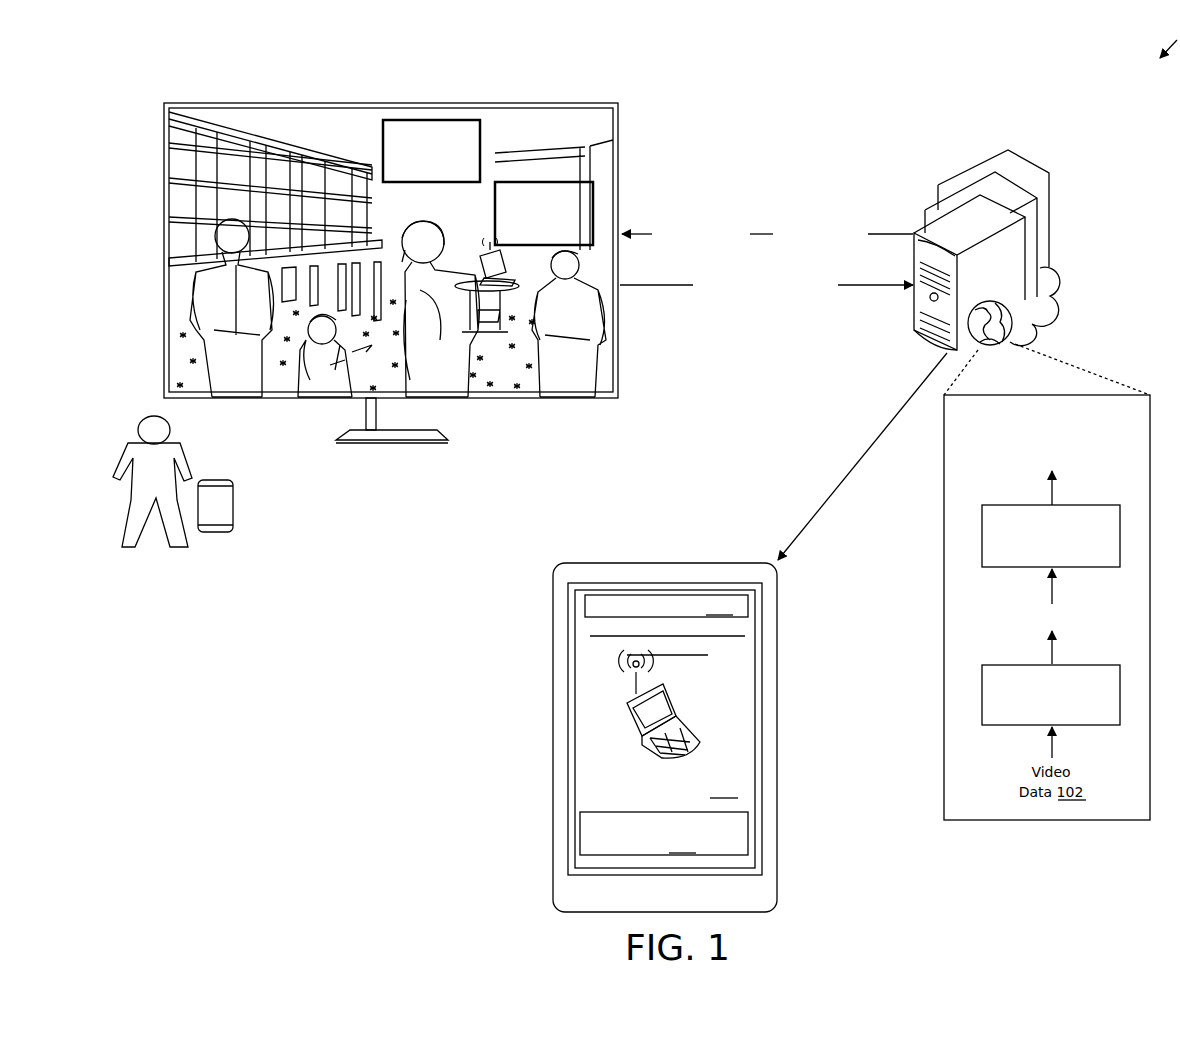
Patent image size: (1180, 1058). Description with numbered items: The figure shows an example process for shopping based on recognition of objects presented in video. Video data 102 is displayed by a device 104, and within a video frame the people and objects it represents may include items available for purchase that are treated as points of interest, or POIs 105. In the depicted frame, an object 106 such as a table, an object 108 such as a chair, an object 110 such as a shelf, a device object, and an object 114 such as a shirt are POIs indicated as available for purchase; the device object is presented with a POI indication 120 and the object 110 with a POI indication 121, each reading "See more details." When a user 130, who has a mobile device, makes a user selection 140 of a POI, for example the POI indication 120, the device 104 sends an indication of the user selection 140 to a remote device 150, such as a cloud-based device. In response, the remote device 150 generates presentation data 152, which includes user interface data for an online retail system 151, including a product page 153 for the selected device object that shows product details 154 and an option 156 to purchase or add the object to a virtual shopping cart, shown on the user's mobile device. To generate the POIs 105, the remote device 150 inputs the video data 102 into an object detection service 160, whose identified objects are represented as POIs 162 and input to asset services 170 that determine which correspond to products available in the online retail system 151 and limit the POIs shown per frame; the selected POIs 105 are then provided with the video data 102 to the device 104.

The video data 102 is at (600, 129).
The device 104 is at (230, 102).
The points of interest (POIs) 105 is at (1087, 463).
The object 106 is at (476, 282).
The object 108 is at (335, 354).
The object 110 is at (431, 296).
The object 114 is at (534, 352).
The POI indication 120 is at (597, 208).
The POI indication 121 is at (483, 118).
The user 130 is at (190, 472).
The user selection 140 is at (644, 287).
The remote device 150 is at (1005, 148).
The online retail system 151 is at (666, 606).
The presentation data 152 is at (862, 456).
The product page 153 is at (667, 637).
The product details 154 is at (667, 790).
The option 156 is at (664, 833).
The object detection service 160 is at (1088, 664).
The POIs 162 is at (1087, 624).
The asset services 170 is at (1088, 504).